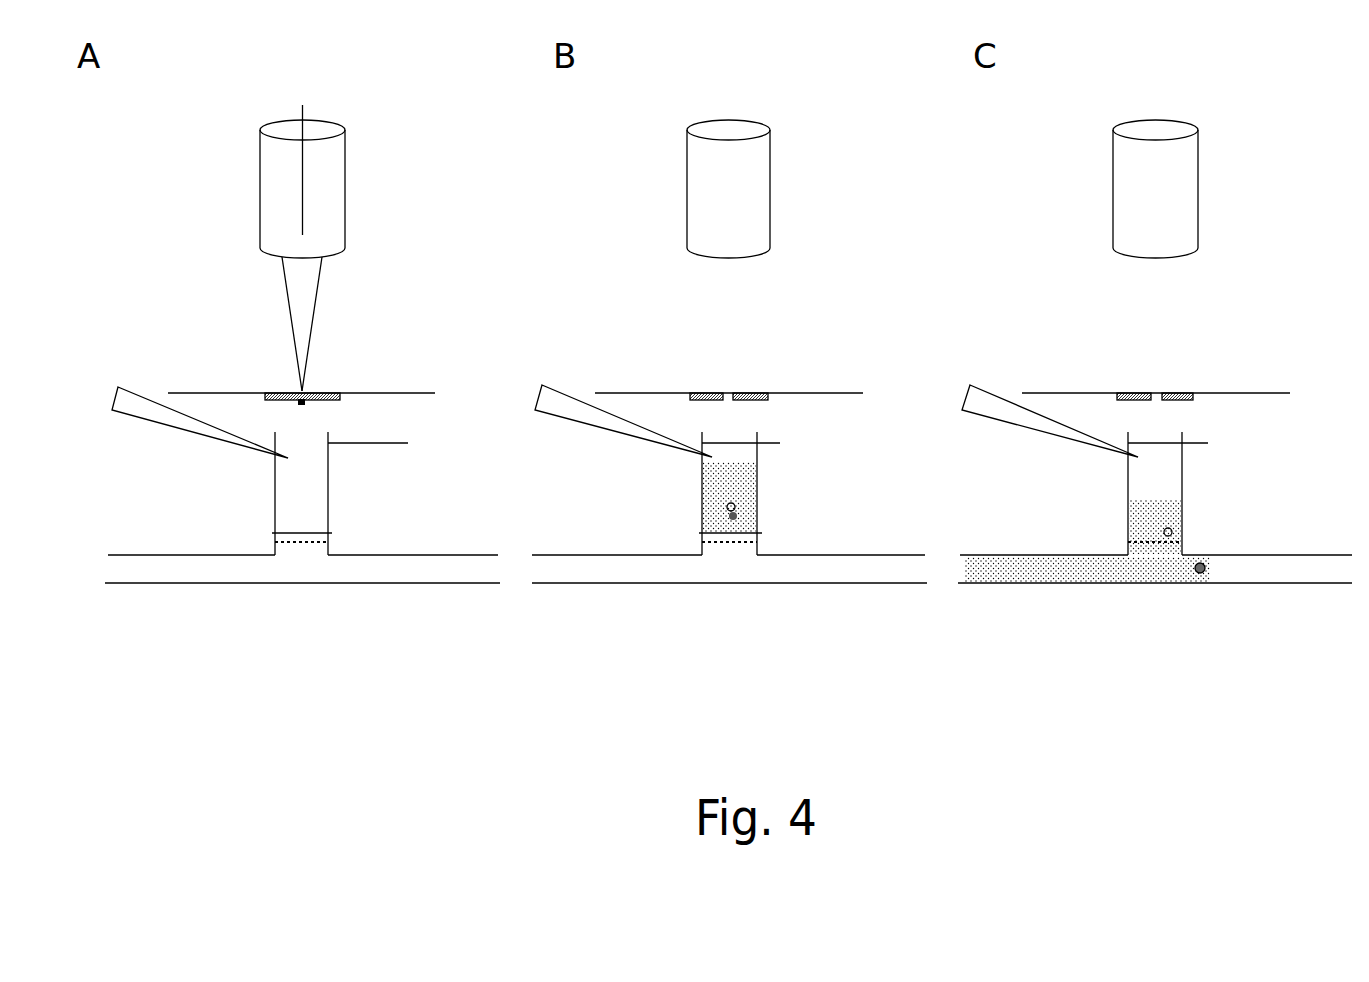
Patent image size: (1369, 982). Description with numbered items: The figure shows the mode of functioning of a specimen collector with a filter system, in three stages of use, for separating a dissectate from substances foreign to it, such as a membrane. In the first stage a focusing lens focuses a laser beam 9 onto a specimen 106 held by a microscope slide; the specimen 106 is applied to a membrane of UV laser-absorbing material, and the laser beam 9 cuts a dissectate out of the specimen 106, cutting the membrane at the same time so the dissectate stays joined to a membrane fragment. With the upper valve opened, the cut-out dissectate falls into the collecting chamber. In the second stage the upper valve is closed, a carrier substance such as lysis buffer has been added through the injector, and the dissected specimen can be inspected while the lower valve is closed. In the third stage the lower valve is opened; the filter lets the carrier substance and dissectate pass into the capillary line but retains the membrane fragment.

The laser beam 9 is at (313, 308).
The specimen 106 is at (327, 392).